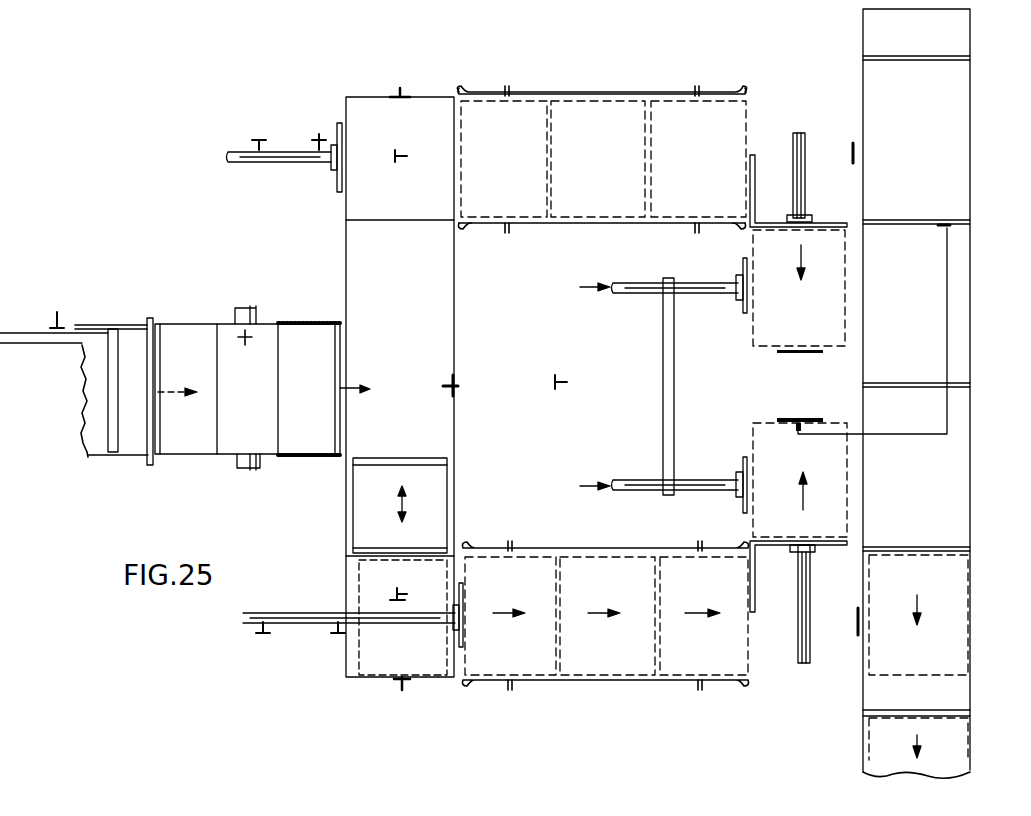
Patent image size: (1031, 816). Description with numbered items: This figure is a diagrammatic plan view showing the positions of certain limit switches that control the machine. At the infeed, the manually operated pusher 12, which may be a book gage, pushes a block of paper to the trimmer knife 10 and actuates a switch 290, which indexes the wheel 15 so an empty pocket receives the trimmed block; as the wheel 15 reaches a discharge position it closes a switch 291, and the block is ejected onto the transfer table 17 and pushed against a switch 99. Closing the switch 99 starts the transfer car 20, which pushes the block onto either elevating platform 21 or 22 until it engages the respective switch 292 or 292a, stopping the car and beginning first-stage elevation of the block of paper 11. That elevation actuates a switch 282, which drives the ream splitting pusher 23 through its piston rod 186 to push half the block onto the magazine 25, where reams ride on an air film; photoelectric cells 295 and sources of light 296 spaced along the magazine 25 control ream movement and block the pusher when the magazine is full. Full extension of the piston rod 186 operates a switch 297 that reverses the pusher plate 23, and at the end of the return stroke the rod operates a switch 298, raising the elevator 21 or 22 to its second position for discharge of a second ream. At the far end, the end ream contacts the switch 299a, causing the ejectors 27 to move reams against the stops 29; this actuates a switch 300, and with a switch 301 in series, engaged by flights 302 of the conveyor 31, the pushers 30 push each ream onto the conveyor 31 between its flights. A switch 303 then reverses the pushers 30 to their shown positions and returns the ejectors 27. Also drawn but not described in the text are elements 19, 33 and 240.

The trimmer knife 10 is at (147, 413).
The block of paper 11 is at (357, 665).
The pusher 12 is at (107, 325).
The wheel 15 is at (300, 322).
The transfer table 17 is at (425, 343).
The pusher rod 19 is at (268, 162).
The transfer car 20 is at (435, 490).
The elevating platform 21 is at (375, 668).
The elevating platform 22 is at (366, 114).
The ream splitting pusher 23 is at (335, 185).
The magazine 25 is at (596, 225).
The ejector 27 is at (826, 222).
The stop 29 is at (816, 418).
The pusher 30 is at (748, 300).
The conveyor 31 is at (950, 198).
The bracket 33 is at (258, 462).
The switch 99 is at (458, 388).
The piston rod 186 is at (428, 625).
The angle bracket 240 is at (754, 160).
The switch 282 is at (400, 155).
The switch 290 is at (55, 313).
The switch 291 is at (246, 344).
The switch 292 is at (405, 686).
The switch 292a is at (400, 89).
The photoelectric cell 295 is at (507, 86).
The source of light 296 is at (507, 233).
The switch 297 is at (319, 138).
The switch 298 is at (257, 138).
The switch 299a is at (853, 143).
The switch 300 is at (777, 428).
The switch 301 is at (950, 225).
The flight 302 is at (893, 218).
The switch 303 is at (558, 380).